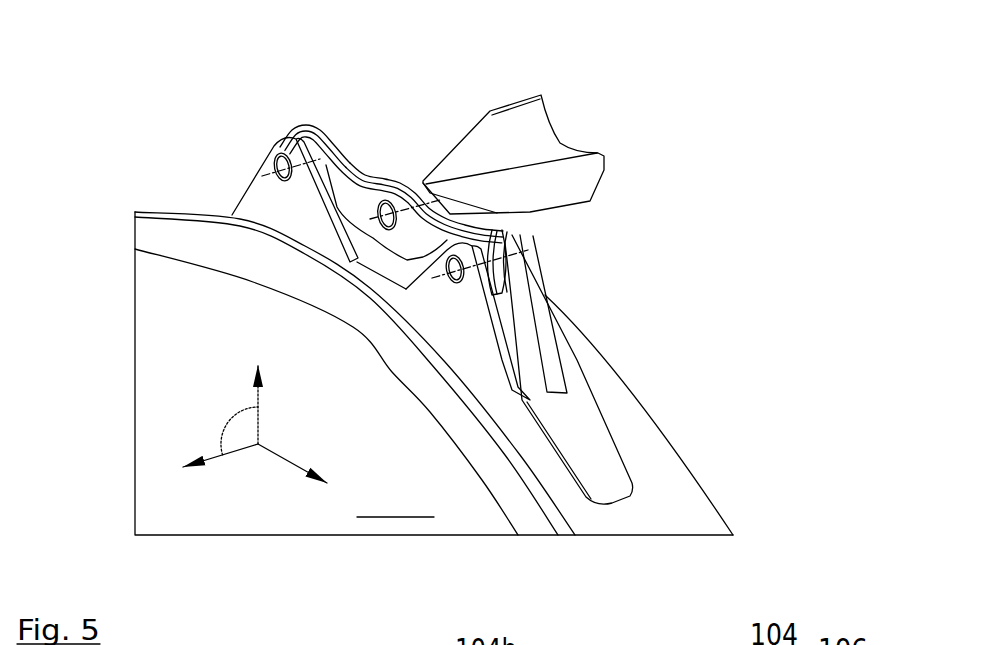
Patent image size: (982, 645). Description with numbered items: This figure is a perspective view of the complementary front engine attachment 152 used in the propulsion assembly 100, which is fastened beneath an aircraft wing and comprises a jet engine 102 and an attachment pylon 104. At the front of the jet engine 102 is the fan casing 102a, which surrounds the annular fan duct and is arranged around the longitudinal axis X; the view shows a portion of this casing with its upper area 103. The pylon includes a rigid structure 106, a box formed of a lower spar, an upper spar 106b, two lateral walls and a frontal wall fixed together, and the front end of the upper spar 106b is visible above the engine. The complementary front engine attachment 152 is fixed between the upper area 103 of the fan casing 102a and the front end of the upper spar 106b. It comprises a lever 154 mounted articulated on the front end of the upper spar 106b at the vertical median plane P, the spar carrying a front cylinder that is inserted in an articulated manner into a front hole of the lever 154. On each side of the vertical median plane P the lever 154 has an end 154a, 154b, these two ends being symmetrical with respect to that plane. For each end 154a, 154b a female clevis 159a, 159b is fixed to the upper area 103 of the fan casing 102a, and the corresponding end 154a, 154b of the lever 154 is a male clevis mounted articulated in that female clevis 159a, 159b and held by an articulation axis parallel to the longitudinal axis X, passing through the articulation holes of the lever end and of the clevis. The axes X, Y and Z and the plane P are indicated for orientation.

The propulsion assembly 100 is at (160, 100).
The jet engine 102 is at (745, 402).
The fan casing 102a is at (395, 501).
The upper area of the fan casing 103 is at (600, 412).
The attachment pylon 104 is at (593, 90).
The rigid structure 106 is at (672, 86).
The upper spar 106b is at (517, 123).
The complementary front engine attachment 152 is at (205, 90).
The lever 154 is at (358, 180).
The end of the lever 154a is at (510, 260).
The end of the lever 154b is at (302, 138).
The female clevis 159a is at (458, 313).
The female clevis 159b is at (257, 190).